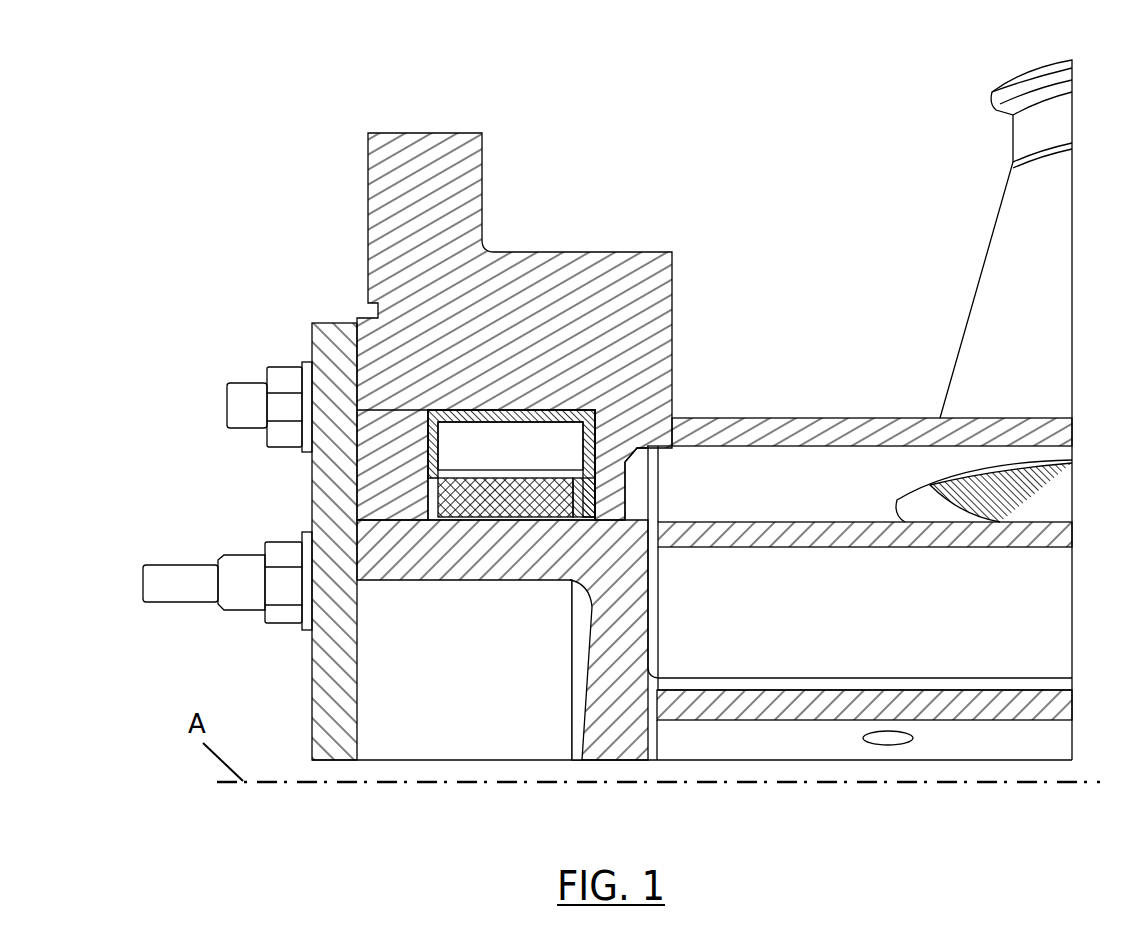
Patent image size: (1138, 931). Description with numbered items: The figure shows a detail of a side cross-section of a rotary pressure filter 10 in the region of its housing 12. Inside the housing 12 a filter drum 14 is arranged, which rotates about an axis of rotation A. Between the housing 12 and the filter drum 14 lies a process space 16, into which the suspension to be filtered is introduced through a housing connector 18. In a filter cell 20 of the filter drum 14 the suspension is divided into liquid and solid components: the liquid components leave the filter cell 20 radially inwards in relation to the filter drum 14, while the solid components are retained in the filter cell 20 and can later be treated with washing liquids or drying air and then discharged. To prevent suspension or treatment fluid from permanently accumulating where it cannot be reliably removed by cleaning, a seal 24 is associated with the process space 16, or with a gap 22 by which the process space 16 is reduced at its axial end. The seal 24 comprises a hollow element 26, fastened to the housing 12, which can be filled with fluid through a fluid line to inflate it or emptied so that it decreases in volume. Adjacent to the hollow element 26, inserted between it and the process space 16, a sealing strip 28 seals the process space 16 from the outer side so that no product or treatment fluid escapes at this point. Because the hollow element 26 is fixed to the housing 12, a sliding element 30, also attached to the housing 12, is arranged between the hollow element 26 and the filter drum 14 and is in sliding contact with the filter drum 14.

The rotary pressure filter 10 is at (168, 80).
The housing 12 is at (440, 185).
The filter drum 14 is at (423, 547).
The process space 16 is at (722, 530).
The housing connector 18 is at (995, 227).
The filter cell 20 is at (800, 580).
The gap 22 is at (612, 513).
The seal 24 is at (562, 393).
The hollow element 26 is at (480, 415).
The sealing strip 28 is at (581, 500).
The sliding element 30 is at (460, 493).